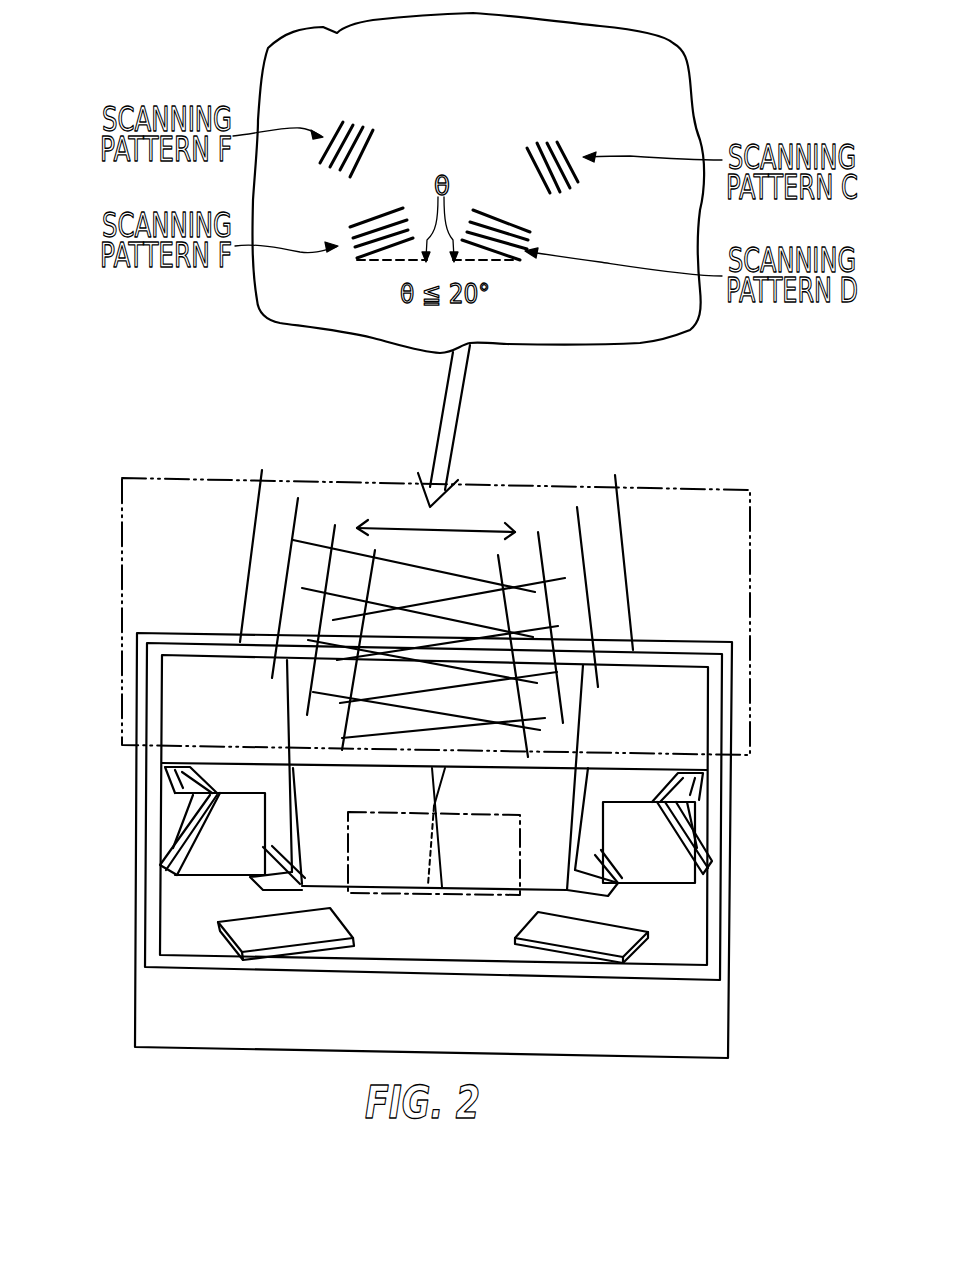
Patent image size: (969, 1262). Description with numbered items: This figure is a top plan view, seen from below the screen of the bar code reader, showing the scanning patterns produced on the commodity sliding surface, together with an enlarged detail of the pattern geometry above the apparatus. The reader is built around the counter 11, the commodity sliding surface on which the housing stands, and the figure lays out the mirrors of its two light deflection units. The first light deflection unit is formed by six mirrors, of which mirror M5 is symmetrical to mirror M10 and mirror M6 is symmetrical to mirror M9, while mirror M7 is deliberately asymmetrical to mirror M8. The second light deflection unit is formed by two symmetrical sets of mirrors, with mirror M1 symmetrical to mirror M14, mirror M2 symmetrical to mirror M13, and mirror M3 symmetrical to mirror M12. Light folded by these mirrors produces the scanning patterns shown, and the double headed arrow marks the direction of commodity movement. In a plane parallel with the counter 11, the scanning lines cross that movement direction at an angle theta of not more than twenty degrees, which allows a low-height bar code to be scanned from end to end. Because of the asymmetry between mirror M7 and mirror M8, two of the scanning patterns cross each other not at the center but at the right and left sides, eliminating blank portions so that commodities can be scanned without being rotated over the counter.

The counter 11 is at (122, 532).
The mirror M1 is at (707, 863).
The mirror M2 is at (658, 877).
The mirror M3 is at (612, 947).
The mirror M5 is at (688, 788).
The mirror M6 is at (675, 723).
The mirror M7 is at (552, 850).
The mirror M8 is at (329, 867).
The mirror M9 is at (171, 698).
The mirror M10 is at (185, 778).
The mirror M12 is at (242, 940).
The mirror M13 is at (203, 870).
The mirror M14 is at (165, 848).